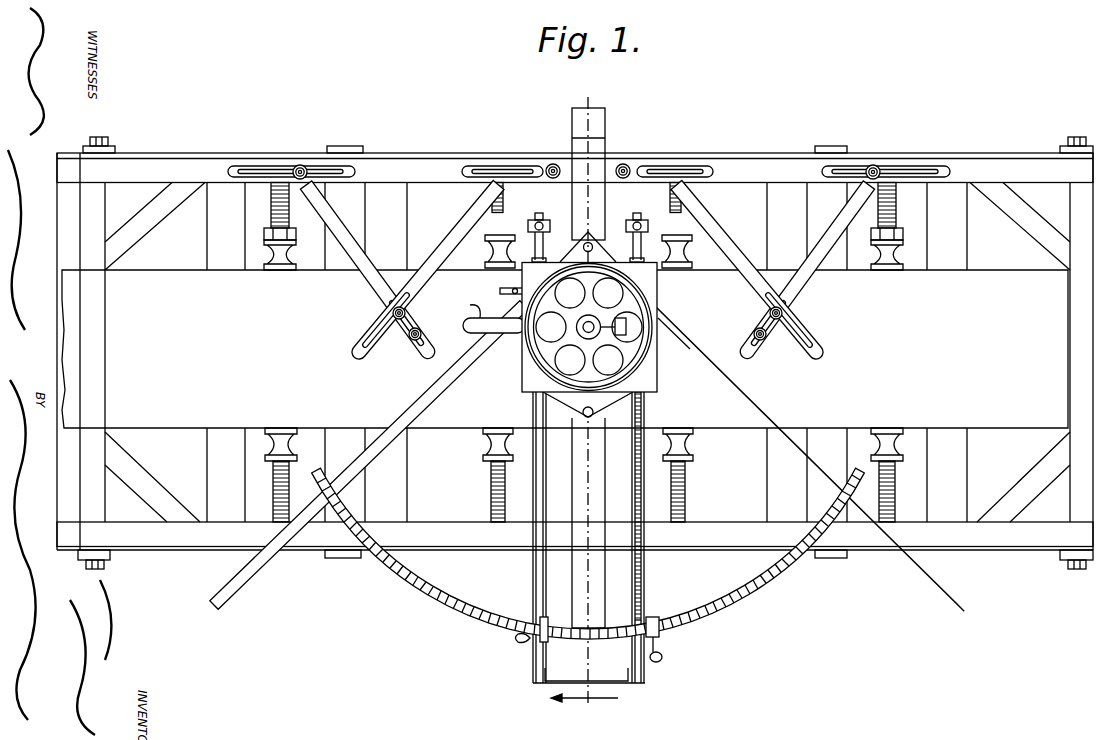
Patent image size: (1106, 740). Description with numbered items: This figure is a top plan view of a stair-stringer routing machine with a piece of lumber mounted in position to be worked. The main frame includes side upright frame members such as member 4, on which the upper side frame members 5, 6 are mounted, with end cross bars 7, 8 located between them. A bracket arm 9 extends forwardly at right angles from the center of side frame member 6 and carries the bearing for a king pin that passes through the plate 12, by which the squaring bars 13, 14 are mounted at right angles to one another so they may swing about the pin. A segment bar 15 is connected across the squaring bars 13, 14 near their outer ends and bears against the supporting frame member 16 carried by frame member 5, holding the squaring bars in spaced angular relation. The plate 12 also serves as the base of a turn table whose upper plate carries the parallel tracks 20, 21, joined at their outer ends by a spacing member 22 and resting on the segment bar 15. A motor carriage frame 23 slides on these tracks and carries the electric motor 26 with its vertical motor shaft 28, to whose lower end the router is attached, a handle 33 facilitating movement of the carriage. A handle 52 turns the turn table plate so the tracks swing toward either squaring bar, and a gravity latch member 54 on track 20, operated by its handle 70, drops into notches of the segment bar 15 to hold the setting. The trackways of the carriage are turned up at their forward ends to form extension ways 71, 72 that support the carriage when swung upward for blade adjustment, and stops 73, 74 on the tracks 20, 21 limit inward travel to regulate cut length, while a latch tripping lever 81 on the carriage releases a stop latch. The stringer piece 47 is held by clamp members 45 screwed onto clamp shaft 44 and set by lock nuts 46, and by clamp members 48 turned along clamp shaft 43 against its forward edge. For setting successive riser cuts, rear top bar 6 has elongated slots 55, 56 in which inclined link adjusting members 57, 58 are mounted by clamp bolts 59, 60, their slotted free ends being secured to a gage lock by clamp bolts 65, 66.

The side upright frame member 4 is at (600, 731).
The upper side frame member 5 is at (982, 533).
The upper side frame member 6 is at (990, 170).
The end cross bar 7 is at (103, 523).
The end cross bar 8 is at (1084, 520).
The bracket arm 9 is at (590, 190).
The plate 12 is at (668, 322).
The squaring bar 13 is at (416, 405).
The squaring bar 14 is at (745, 395).
The segment bar 15 is at (728, 604).
The supporting frame member 16 is at (580, 578).
The track 20 is at (533, 487).
The track 21 is at (644, 490).
The spacing member 22 is at (618, 682).
The motor carriage frame 23 is at (645, 378).
The electric motor 26 is at (548, 347).
The motor shaft 28 is at (560, 362).
The handle 33 is at (588, 420).
The screw-threaded clamp shaft 43 is at (280, 507).
The screw-threaded clamp shaft 44 is at (283, 200).
The clamp member 45 is at (280, 256).
The lock nut 46 is at (268, 235).
The stringer piece 47 is at (125, 355).
The clamp member 48 is at (263, 443).
The handle 52 is at (488, 314).
The latch member 54 is at (540, 617).
The elongated slot 55 is at (516, 168).
The elongated slot 56 is at (238, 170).
The link adjusting member 57 is at (358, 260).
The link adjusting member 58 is at (450, 258).
The clamp bolt 59 is at (553, 165).
The clamp bolt 60 is at (306, 167).
The clamp bolt 65 is at (785, 313).
The clamping bolt 66 is at (764, 340).
The handle 70 is at (522, 640).
The extension way 71 is at (647, 233).
The extension way 72 is at (528, 245).
The stop 73 is at (507, 186).
The stop 74 is at (675, 186).
The latch tripping lever 81 is at (505, 290).